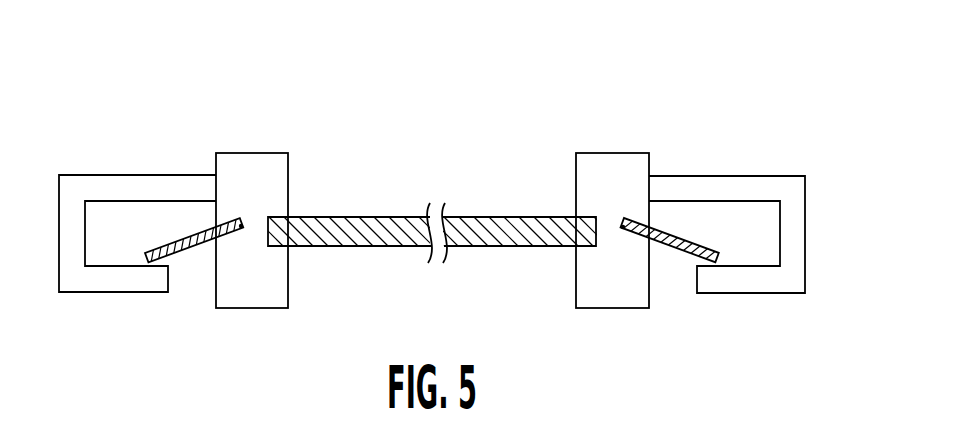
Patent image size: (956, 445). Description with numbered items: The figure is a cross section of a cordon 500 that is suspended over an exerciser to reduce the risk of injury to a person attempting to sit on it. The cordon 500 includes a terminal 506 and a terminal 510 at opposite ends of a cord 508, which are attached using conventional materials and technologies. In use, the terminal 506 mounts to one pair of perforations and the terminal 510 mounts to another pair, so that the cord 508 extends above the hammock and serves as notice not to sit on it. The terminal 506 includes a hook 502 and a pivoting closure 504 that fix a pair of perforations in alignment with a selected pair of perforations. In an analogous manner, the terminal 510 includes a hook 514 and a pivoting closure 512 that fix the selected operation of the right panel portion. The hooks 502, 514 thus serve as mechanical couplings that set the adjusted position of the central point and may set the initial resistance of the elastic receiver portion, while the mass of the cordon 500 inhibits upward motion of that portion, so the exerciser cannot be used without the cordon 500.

The cordon 500 is at (133, 77).
The hook 502 is at (130, 175).
The pivoting closure 504 is at (190, 254).
The terminal 506 is at (243, 153).
The cord 508 is at (517, 216).
The terminal 510 is at (620, 152).
The pivoting closure 512 is at (667, 250).
The hook 514 is at (769, 175).